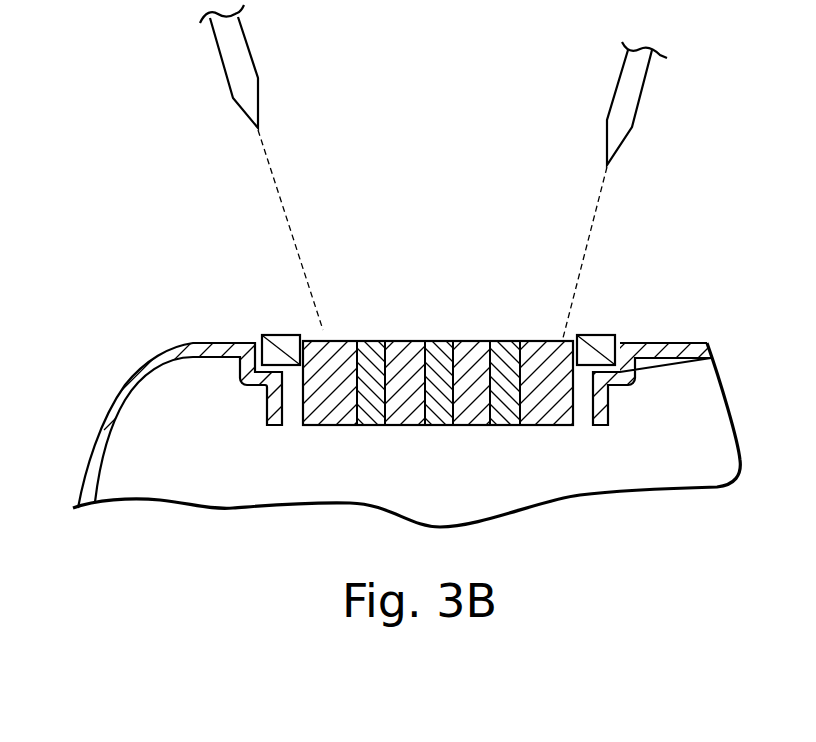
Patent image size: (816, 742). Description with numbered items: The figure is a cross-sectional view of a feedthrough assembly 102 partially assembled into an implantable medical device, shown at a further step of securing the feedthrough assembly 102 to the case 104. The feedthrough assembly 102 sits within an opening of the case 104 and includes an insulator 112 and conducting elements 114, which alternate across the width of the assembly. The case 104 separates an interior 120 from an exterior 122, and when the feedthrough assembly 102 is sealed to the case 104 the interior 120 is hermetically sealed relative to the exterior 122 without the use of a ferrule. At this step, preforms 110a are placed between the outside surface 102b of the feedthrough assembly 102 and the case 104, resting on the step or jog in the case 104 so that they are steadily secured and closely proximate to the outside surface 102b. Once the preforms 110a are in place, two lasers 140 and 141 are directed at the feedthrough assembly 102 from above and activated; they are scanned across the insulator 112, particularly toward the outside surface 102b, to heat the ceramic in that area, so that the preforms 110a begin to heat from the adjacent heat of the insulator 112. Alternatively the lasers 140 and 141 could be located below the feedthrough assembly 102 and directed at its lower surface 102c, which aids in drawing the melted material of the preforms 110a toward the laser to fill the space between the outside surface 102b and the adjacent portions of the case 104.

The case 104 is at (110, 405).
The interior 120 is at (215, 453).
The exterior 122 is at (110, 310).
The feedthrough assembly 102 is at (329, 341).
The outside surface 102b is at (302, 405).
The lower surface 102c is at (532, 427).
The preforms 110a is at (270, 334).
The insulator 112 is at (338, 340).
The conducting elements 114 is at (370, 427).
The laser 140 is at (222, 58).
The laser 141 is at (650, 82).